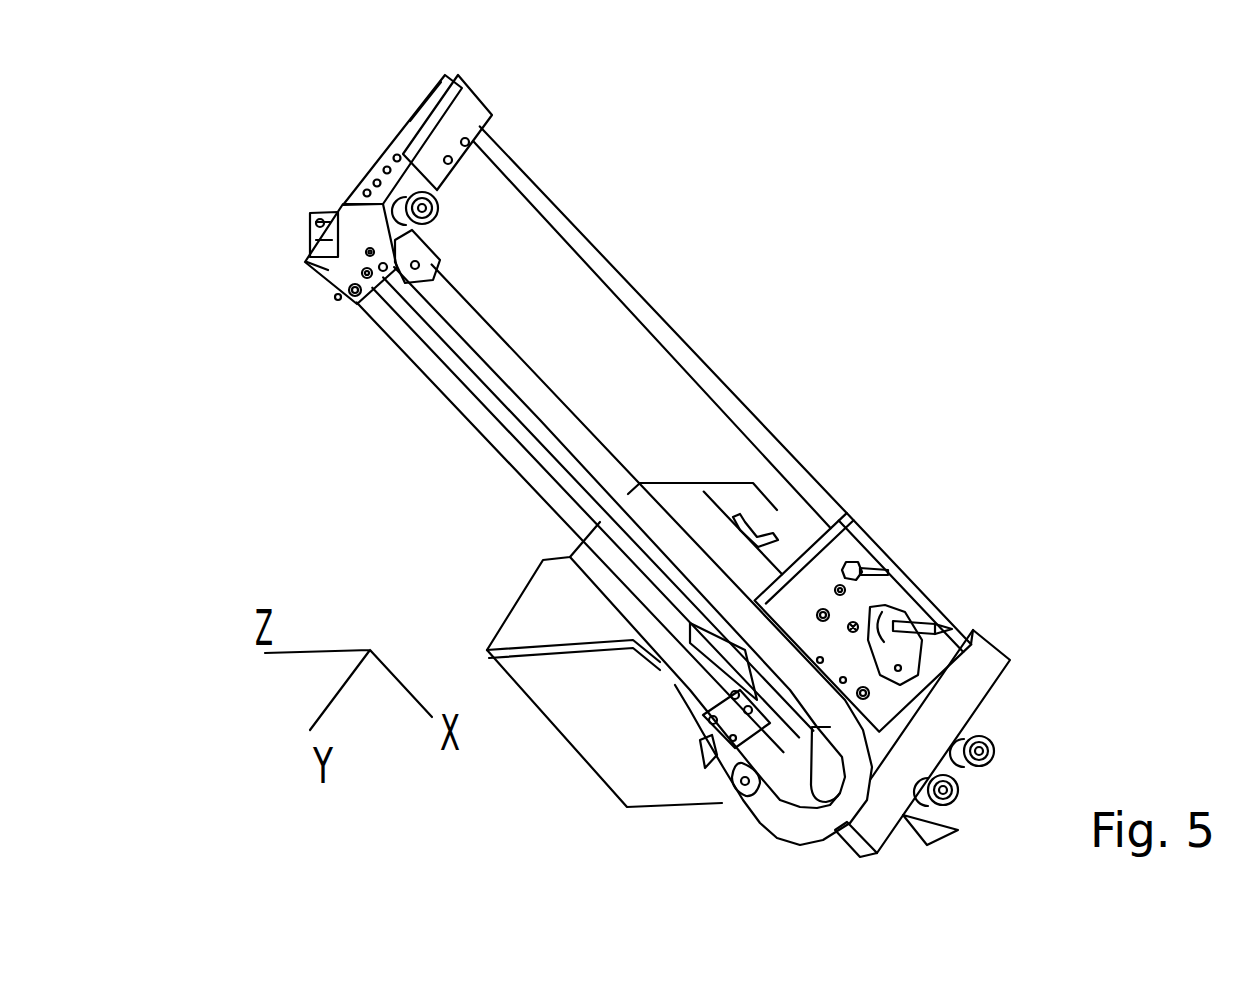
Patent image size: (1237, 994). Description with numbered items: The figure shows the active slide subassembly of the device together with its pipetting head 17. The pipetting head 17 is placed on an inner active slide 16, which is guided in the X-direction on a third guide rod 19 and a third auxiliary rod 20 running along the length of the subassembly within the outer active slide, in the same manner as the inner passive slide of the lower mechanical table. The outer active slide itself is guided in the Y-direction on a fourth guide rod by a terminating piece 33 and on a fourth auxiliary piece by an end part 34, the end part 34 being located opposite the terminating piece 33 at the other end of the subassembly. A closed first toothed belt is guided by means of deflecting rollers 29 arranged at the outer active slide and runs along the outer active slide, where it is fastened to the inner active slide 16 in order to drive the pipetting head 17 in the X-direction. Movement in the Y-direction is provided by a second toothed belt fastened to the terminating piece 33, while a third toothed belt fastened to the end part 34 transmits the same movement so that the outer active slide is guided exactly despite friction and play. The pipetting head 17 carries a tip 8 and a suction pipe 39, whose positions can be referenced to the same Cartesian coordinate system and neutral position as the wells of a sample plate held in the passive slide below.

The tip 8 is at (930, 618).
The inner active slide 16 is at (860, 520).
The pipetting head 17 is at (700, 497).
The third guide rod 19 is at (460, 397).
The third auxiliary rod 20 is at (627, 280).
The deflecting rollers 29 is at (440, 190).
The terminating piece 33 is at (983, 647).
The end part 34 is at (445, 118).
The suction pipe 39 is at (883, 553).